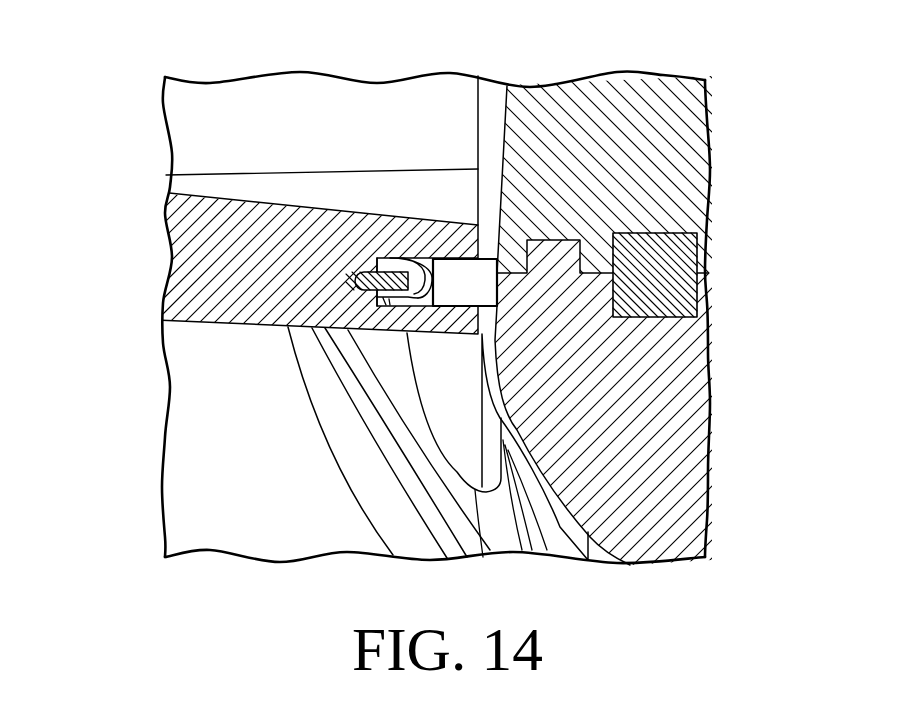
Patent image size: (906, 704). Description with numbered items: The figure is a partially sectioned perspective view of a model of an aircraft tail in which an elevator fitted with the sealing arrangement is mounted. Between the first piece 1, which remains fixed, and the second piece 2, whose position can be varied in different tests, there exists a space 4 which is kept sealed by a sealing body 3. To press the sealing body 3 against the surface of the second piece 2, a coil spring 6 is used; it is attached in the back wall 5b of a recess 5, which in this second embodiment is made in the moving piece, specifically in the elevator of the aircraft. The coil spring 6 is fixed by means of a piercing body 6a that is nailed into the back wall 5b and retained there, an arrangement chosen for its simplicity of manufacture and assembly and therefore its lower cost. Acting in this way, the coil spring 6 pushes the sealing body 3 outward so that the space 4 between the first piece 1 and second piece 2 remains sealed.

The first piece 1 is at (195, 227).
The second piece 2 is at (632, 371).
The sealing body 3 is at (470, 282).
The space to seal 4 is at (489, 218).
The recess 5 is at (385, 302).
The back wall of the recess 5b is at (377, 256).
The coil spring 6 is at (420, 297).
The piercing body 6a is at (356, 283).